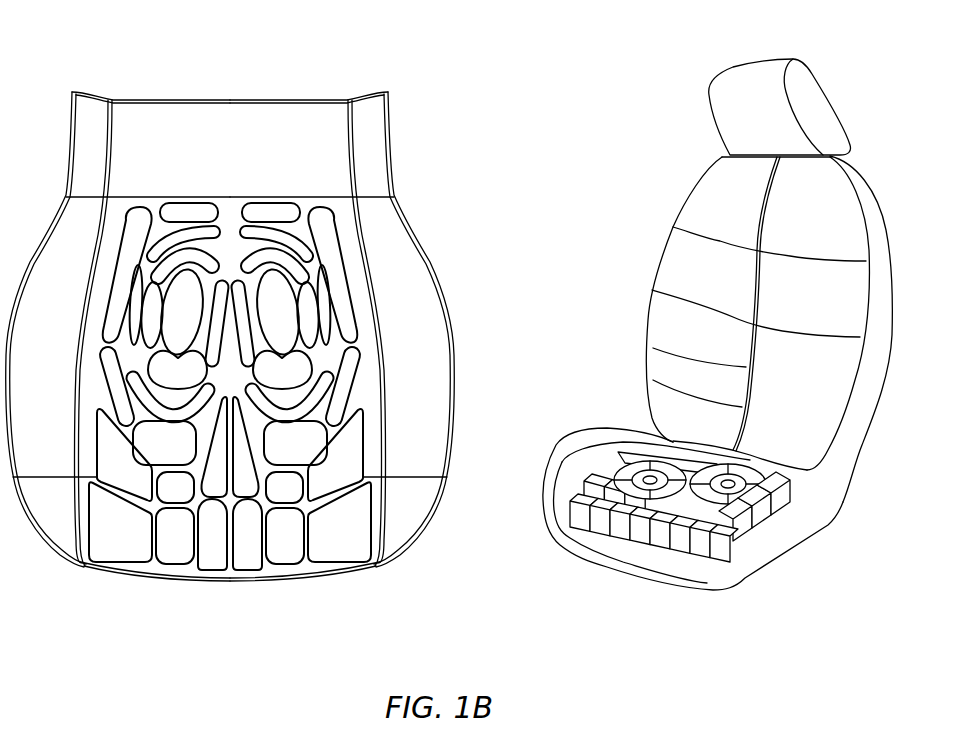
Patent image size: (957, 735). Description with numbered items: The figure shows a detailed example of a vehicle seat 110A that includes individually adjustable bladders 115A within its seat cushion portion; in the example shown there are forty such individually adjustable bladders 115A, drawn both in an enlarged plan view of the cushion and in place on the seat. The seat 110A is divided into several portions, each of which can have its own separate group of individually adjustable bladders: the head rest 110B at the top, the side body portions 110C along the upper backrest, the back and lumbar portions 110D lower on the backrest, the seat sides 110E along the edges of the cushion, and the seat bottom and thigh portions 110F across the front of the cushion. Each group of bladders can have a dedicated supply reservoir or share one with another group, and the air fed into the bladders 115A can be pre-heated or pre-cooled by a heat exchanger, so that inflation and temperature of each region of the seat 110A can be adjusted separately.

The seat 110A is at (709, 261).
The head rest 110B is at (728, 118).
The side body portions 110C is at (668, 262).
The back & lumbar portion(s) 110D is at (653, 348).
The seat sides 110E is at (797, 492).
The seat bottom and thigh portion(s) 110F is at (745, 540).
The individually adjustable bladders 115A is at (463, 365).